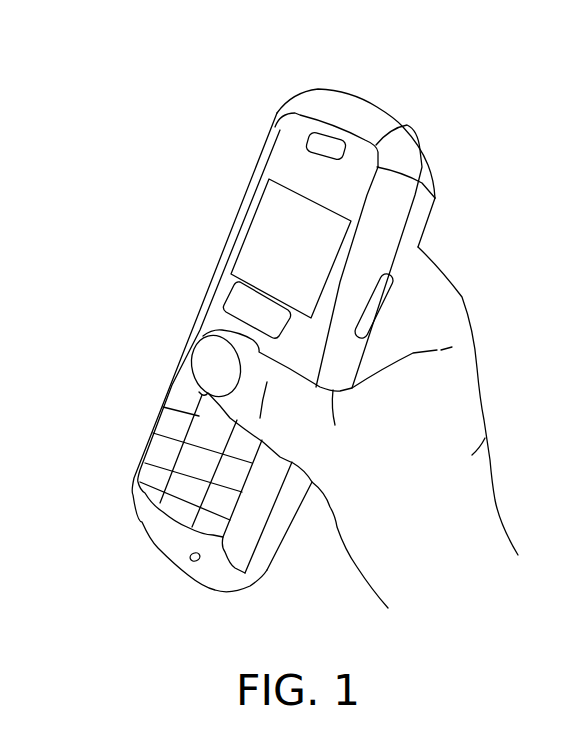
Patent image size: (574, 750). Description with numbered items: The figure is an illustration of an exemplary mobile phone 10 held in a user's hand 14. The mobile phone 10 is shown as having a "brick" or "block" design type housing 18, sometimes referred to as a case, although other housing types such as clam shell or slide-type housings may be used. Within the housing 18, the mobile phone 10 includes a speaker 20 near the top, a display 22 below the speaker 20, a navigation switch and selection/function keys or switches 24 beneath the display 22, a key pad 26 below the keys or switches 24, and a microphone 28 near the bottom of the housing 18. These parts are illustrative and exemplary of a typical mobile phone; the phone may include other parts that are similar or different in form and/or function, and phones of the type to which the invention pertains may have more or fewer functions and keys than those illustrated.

The mobile phone 10 is at (291, 103).
The user's hand 14 is at (460, 352).
The housing 18 is at (268, 135).
The speaker 20 is at (310, 145).
The display 22 is at (272, 215).
The navigation switch and selection/function keys or switches 24 is at (211, 323).
The key pad 26 is at (180, 392).
The microphone 28 is at (193, 562).